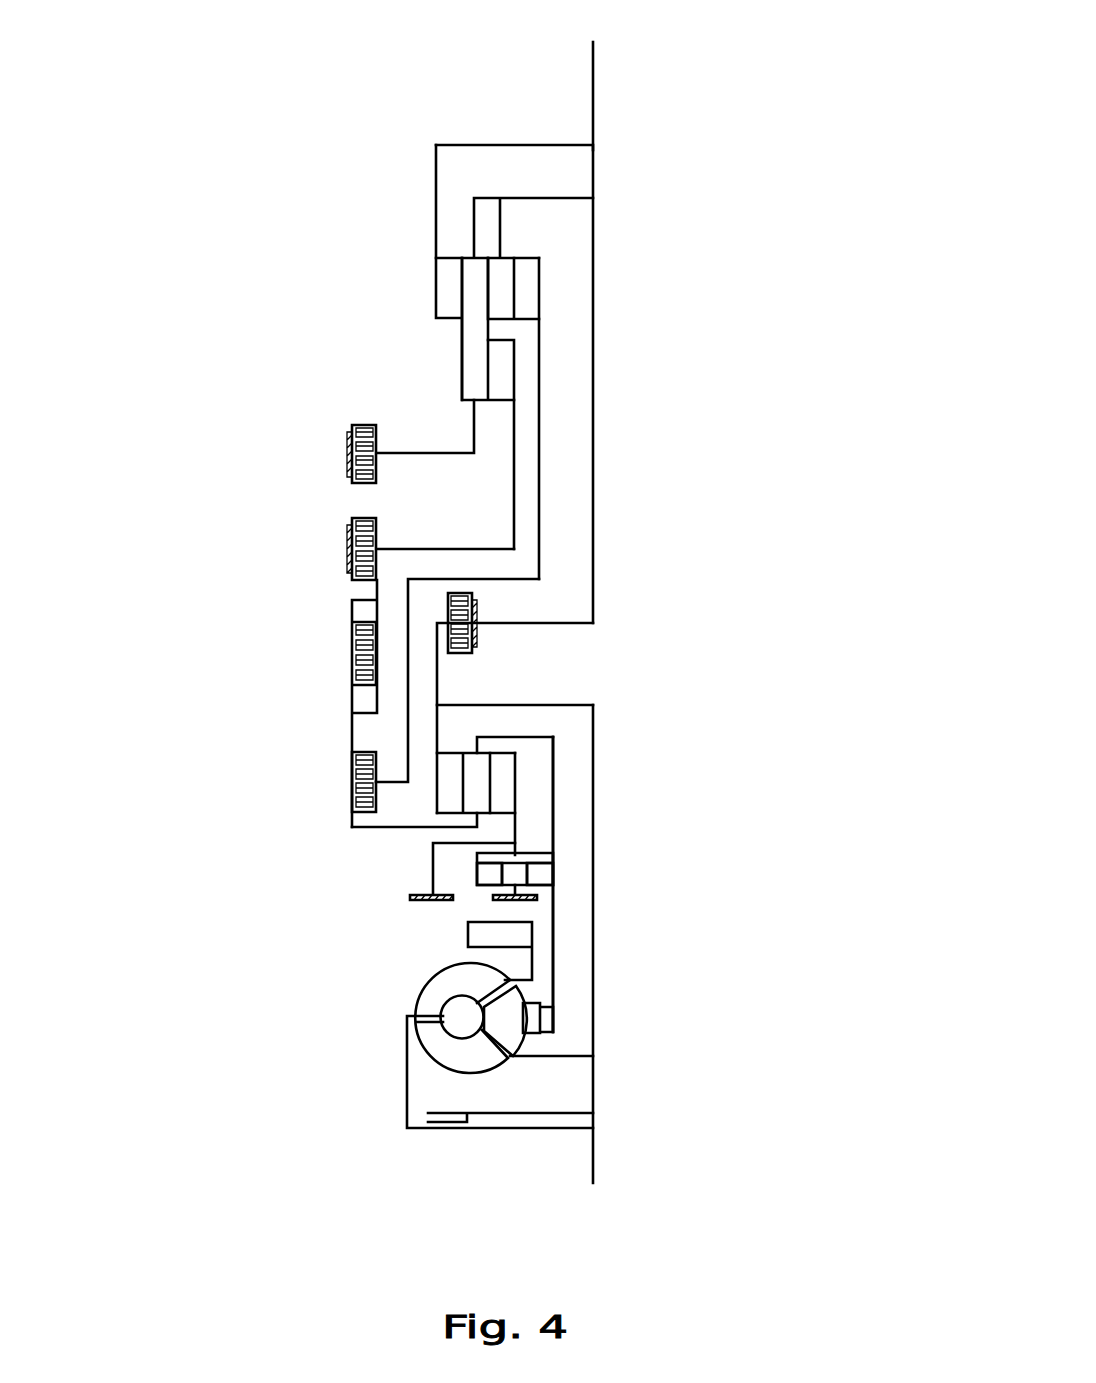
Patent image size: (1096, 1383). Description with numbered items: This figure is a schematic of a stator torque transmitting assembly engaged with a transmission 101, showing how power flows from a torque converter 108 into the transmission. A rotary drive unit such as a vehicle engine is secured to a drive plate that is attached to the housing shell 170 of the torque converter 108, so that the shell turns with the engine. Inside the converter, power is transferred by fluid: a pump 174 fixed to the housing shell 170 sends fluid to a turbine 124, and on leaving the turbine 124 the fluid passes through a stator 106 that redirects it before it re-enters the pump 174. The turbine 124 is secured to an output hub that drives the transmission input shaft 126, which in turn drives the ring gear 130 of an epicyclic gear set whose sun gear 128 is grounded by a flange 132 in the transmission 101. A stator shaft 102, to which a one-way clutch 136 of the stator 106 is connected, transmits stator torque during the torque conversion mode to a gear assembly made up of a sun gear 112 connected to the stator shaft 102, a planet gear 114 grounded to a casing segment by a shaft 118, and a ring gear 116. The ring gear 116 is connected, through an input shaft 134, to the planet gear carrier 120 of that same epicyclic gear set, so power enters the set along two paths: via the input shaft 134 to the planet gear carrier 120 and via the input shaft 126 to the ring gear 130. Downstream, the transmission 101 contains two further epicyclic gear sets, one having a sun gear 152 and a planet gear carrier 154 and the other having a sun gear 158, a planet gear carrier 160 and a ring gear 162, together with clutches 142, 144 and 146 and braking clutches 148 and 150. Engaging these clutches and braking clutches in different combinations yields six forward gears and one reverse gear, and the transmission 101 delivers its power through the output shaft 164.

The transmission 101 is at (312, 252).
The stator shaft 102 is at (553, 963).
The stator 106 is at (502, 1020).
The torque converter 108 is at (378, 975).
The sun gear 112 is at (542, 873).
The planet gear 114 is at (512, 872).
The ring gear 116 is at (487, 873).
The shaft 118 is at (513, 900).
The planet gear carrier 120 is at (472, 767).
The turbine 124 is at (442, 1048).
The transmission input shaft 126 is at (593, 922).
The sun gear 128 is at (505, 770).
The ring gear 130 is at (453, 798).
The flange 132 is at (433, 900).
The input shaft 134 is at (555, 812).
The one-way clutch 136 is at (548, 1025).
The clutch 142 is at (352, 773).
The clutch 144 is at (352, 657).
The clutch 146 is at (473, 638).
The braking clutch 148 is at (347, 550).
The braking clutch 150 is at (347, 447).
The sun gear 152 is at (505, 385).
The planet gear carrier 154 is at (475, 378).
The sun gear 158 is at (532, 270).
The planet gear carrier 160 is at (498, 302).
The ring gear 162 is at (445, 298).
The output shaft 164 is at (593, 98).
The housing shell 170 is at (407, 1102).
The pump 174 is at (453, 982).